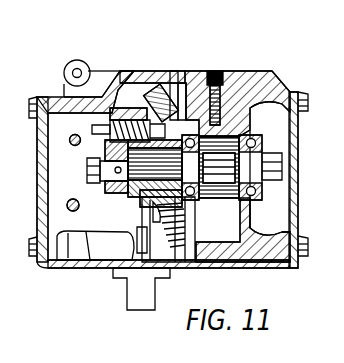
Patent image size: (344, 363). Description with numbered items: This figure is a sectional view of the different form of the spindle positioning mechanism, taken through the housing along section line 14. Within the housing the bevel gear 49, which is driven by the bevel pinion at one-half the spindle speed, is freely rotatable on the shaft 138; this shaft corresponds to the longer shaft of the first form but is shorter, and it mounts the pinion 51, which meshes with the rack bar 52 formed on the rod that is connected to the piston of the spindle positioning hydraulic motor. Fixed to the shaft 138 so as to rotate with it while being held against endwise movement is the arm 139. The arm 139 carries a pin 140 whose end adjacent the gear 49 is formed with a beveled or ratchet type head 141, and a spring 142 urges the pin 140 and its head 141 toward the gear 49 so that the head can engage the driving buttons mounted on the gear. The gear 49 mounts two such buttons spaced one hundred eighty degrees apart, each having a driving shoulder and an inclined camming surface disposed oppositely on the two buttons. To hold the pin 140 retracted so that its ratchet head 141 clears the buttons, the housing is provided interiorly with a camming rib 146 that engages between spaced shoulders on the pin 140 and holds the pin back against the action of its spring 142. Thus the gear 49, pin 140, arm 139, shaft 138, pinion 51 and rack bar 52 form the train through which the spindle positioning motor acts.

The section line 14- 14 is at (153, 190).
The bevel gear 49 is at (173, 73).
The pinion 51 is at (238, 196).
The rack bar 52 is at (236, 72).
The shaft 138 is at (142, 198).
The arm 139 is at (107, 193).
The pin 140 is at (100, 125).
The beveled or ratchet type head 141 is at (214, 72).
The spring 142 is at (147, 103).
The camming rib 146 is at (90, 262).